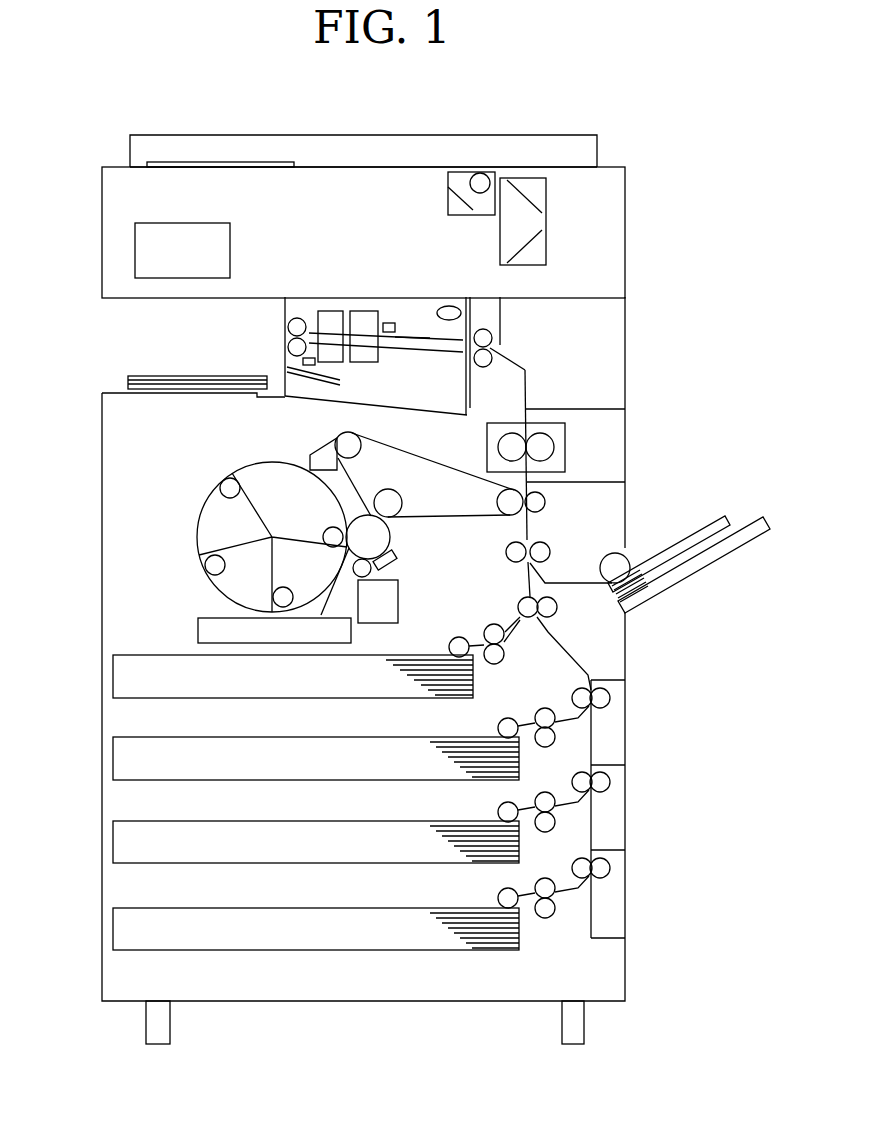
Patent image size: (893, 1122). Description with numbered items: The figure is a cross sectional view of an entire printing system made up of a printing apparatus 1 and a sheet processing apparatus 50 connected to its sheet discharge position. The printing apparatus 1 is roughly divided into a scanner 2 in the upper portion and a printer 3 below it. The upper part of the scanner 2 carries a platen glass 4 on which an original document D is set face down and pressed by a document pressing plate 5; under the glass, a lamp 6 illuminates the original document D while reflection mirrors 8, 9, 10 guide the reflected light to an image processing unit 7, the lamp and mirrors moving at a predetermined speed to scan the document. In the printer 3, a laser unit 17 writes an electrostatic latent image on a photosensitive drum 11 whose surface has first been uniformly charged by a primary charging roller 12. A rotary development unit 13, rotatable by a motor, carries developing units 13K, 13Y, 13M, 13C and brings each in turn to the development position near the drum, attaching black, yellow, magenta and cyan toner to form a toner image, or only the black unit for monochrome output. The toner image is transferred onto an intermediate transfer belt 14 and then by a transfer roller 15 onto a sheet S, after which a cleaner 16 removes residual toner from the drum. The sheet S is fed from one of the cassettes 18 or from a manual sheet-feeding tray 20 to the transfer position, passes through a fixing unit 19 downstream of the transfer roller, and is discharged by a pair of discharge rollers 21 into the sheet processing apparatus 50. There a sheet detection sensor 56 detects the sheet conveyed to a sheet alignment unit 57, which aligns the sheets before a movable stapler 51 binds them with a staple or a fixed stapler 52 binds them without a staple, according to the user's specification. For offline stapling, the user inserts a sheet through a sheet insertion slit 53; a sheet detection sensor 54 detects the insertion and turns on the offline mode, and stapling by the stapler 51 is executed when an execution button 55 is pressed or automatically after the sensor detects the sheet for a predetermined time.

The printing apparatus 1 is at (606, 167).
The scanner 2 is at (102, 232).
The printer 3 is at (102, 472).
The platen glass 4 is at (400, 167).
The document pressing plate 5 is at (265, 135).
The lamp 6 is at (480, 173).
The image processing unit 7 is at (190, 223).
The reflection mirror 8 is at (448, 200).
The reflection mirror 9 is at (532, 210).
The reflection mirror 10 is at (530, 250).
The photosensitive drum 11 is at (380, 530).
The primary charging roller 12 is at (385, 583).
The rotary development unit 13 is at (198, 459).
The developing unit 13K is at (272, 475).
The developing unit 13C is at (215, 513).
The developing unit 13M is at (230, 580).
The developing unit 13Y is at (290, 580).
The intermediate transfer belt 14 is at (425, 468).
The transfer roller 15 is at (546, 503).
The cleaner 16 is at (396, 557).
The laser unit 17 is at (198, 626).
The cassette 18 is at (113, 930).
The fixing unit 19 is at (565, 440).
The manual sheet-feeding tray 20 is at (700, 580).
The pair of discharge rollers 21 is at (494, 338).
The sheet processing apparatus 50 is at (250, 323).
The stapler 51 is at (325, 311).
The stapler 52 is at (362, 311).
The sheet insertion slit 53 is at (290, 372).
The sheet detection sensor 54 is at (290, 350).
The execution button 55 is at (450, 306).
The sheet detection sensor 56 is at (388, 323).
The sheet alignment unit 57 is at (412, 337).
The original document D is at (183, 162).
The sheet S is at (125, 385).